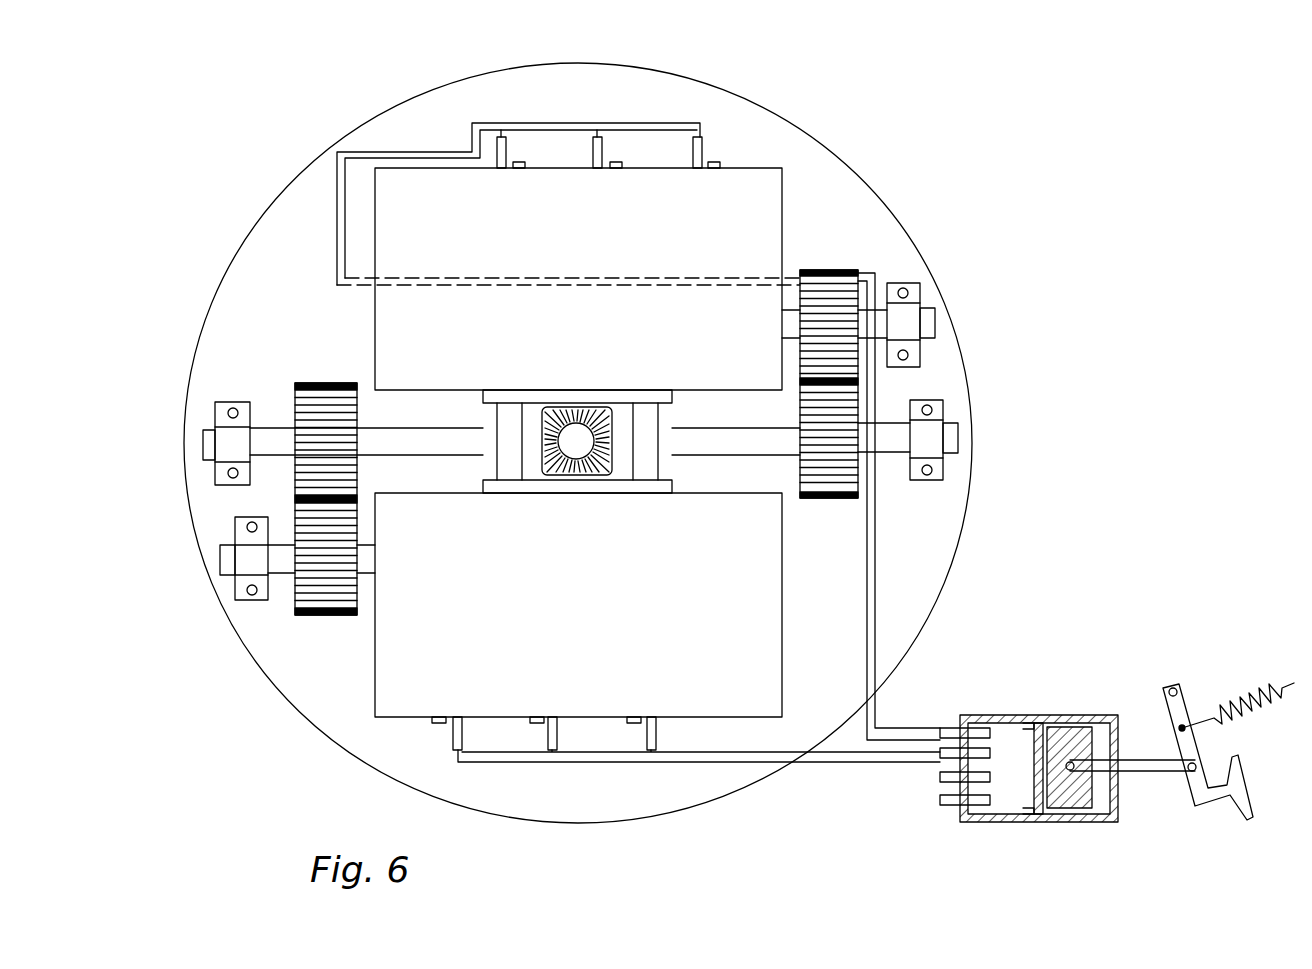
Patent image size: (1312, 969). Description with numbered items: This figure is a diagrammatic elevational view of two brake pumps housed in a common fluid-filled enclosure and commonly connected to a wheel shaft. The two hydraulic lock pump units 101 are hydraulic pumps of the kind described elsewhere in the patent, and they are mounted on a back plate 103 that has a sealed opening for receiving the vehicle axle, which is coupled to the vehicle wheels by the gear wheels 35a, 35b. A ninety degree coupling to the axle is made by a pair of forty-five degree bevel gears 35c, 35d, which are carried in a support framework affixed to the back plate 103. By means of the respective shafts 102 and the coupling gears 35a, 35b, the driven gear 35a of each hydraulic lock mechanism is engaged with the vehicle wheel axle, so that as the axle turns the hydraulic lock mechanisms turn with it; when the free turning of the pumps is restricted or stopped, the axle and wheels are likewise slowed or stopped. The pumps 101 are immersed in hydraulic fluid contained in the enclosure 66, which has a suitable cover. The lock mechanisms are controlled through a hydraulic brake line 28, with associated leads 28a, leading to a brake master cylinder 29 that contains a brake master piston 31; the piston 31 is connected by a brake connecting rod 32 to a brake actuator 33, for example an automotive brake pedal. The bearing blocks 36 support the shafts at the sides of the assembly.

The enclosure 66 is at (920, 243).
The hydraulic lock pump unit 101 is at (620, 640).
The back plate 103 is at (287, 318).
The electrical leads 28a is at (700, 148).
The hydraulic brake line 28 is at (905, 728).
The driven gear 35a is at (848, 268).
The coupling gear 35b is at (330, 383).
The shaft 102 is at (400, 457).
The bevel gear 35c is at (578, 493).
The bevel gear 35d is at (556, 407).
The bearing blocks 36 is at (222, 576).
The brake master cylinder 29 is at (1012, 795).
The brake master piston 31 is at (1068, 733).
The brake connecting rod 32 is at (1140, 775).
The brake actuator 33 is at (1200, 795).